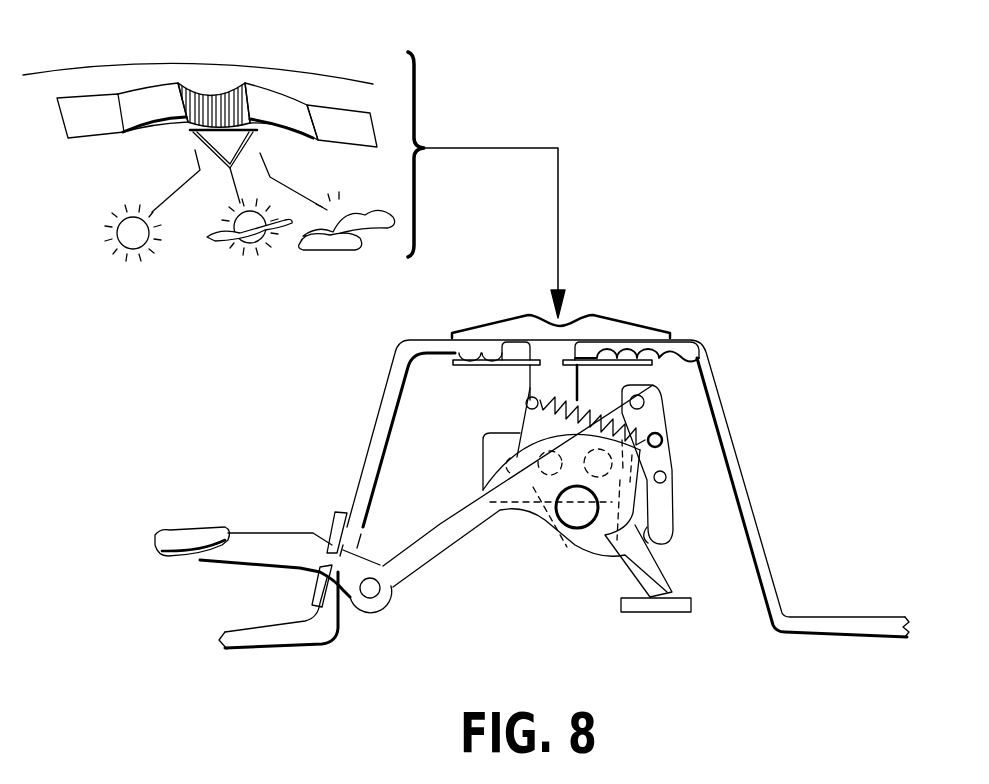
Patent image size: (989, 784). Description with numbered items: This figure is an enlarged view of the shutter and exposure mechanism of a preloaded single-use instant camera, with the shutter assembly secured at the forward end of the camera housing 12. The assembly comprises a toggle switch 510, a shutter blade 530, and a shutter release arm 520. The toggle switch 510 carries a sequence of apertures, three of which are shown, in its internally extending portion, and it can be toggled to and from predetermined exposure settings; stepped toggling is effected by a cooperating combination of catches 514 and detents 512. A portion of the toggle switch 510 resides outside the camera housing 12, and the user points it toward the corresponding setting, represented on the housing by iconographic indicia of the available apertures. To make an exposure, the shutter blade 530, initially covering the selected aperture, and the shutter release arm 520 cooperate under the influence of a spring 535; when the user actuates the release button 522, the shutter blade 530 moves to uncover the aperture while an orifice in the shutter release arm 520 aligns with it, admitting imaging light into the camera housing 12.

The camera housing 12 is at (765, 540).
The toggle switch 510 is at (273, 107).
The detents 512 is at (698, 372).
The catches 514 is at (645, 365).
The shutter release arm 520 is at (432, 563).
The release button 522 is at (192, 538).
The shutter blade 530 is at (665, 397).
The spring 535 is at (660, 466).